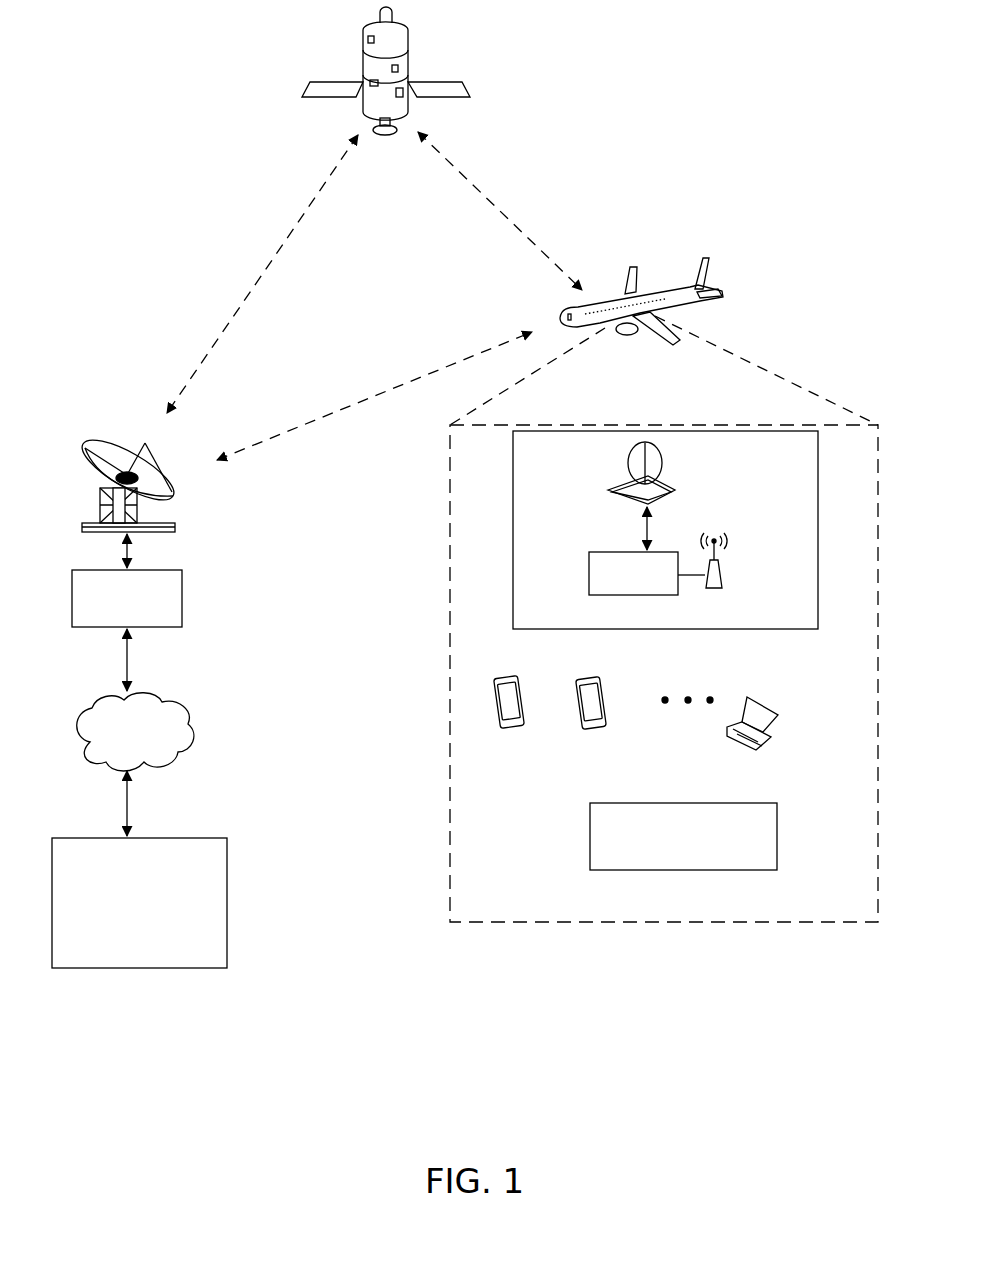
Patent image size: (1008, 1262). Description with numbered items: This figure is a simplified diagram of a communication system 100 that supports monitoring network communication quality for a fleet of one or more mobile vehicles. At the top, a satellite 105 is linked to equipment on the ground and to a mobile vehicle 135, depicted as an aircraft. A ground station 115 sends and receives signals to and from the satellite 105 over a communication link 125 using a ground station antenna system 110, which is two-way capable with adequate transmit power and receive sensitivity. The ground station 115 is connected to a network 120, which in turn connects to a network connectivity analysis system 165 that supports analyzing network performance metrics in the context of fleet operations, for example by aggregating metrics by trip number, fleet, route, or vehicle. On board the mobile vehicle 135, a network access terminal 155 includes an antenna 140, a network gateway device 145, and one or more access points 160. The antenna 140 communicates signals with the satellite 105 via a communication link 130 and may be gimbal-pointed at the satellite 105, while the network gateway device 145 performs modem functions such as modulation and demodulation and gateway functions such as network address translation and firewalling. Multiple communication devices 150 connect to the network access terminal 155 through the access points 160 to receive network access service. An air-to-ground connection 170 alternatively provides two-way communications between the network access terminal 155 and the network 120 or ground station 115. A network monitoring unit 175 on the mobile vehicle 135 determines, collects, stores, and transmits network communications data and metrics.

The communication system 100 is at (668, 92).
The satellite 105 is at (408, 38).
The ground station antenna system 110 is at (173, 497).
The ground station 115 is at (182, 608).
The network 120 is at (178, 758).
The communication link 125 is at (243, 300).
The communication link 130 is at (510, 220).
The mobile vehicle 135 is at (573, 315).
The antenna 140 is at (664, 458).
The network gateway device 145 is at (665, 551).
The communication devices 150 is at (521, 728).
The network access terminal 155 is at (818, 525).
The access points 160 is at (723, 584).
The network connectivity analysis system 165 is at (227, 893).
The air-to-ground connection 170 is at (340, 410).
The network monitoring unit 175 is at (777, 838).